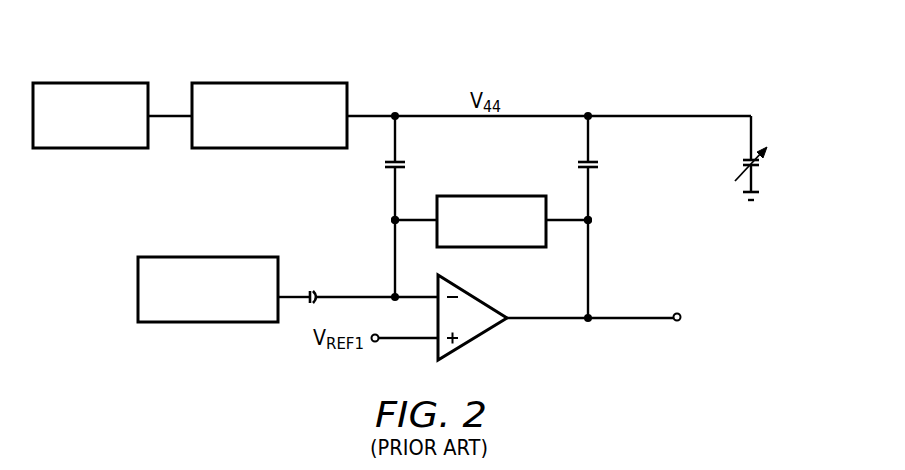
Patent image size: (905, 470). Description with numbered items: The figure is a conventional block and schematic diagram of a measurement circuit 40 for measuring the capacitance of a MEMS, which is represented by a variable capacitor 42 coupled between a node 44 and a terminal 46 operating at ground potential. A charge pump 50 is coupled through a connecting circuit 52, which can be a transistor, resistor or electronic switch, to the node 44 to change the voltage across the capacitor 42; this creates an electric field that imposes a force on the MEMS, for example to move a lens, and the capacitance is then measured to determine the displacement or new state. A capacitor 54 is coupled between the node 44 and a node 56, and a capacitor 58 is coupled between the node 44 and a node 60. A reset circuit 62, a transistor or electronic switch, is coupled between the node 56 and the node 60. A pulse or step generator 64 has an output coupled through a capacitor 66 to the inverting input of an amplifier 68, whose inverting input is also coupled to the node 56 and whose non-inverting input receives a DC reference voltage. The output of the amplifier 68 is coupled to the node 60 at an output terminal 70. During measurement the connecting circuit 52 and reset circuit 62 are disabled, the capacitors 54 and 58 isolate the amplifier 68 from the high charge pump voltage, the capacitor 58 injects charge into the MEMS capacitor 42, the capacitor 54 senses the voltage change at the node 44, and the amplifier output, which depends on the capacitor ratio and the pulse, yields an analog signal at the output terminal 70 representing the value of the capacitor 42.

The measurement circuit 40 is at (774, 80).
The variable capacitor 42 is at (758, 165).
The node 44 is at (396, 112).
The terminal 46 is at (753, 198).
The charge pump 50 is at (92, 83).
The connecting circuit 52 is at (268, 83).
The capacitor 54 is at (385, 162).
The node 56 is at (393, 220).
The capacitor 58 is at (598, 166).
The node 60 is at (590, 220).
The reset circuit 62 is at (492, 196).
The pulse generator 64 is at (208, 257).
The capacitor 66 is at (317, 292).
The amplifier 68 is at (474, 340).
The output terminal 70 is at (683, 320).